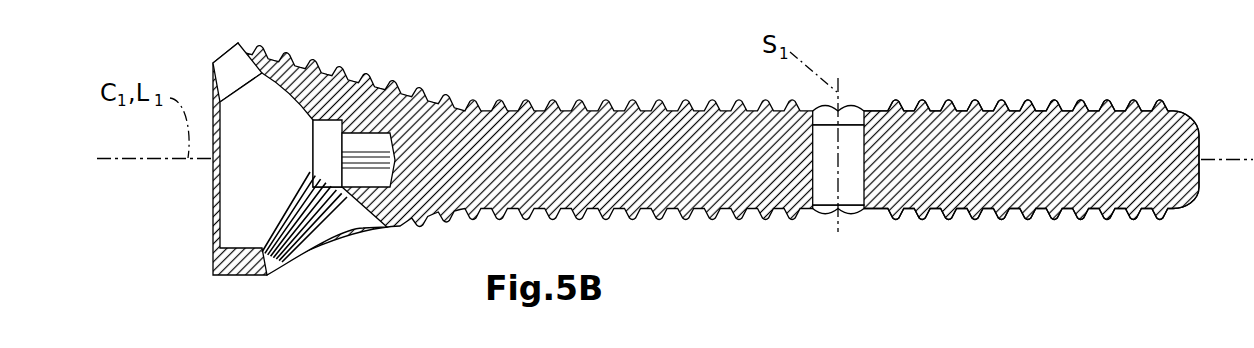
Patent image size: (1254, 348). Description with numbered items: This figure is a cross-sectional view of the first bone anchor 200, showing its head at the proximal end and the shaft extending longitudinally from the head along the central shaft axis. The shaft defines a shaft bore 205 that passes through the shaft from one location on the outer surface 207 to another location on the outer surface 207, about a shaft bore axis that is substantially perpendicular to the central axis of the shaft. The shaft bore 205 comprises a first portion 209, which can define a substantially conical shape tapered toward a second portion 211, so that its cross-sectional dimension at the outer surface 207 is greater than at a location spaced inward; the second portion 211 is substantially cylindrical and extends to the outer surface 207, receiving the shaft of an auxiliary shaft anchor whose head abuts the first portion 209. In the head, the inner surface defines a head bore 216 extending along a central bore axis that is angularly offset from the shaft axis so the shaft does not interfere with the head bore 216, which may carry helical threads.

The first bone anchor 200 is at (732, 153).
The shaft bore 205 is at (843, 135).
The outer surface 207 is at (1000, 100).
The first portion 209 is at (811, 124).
The second portion 211 is at (813, 160).
The head bore 216 is at (315, 195).